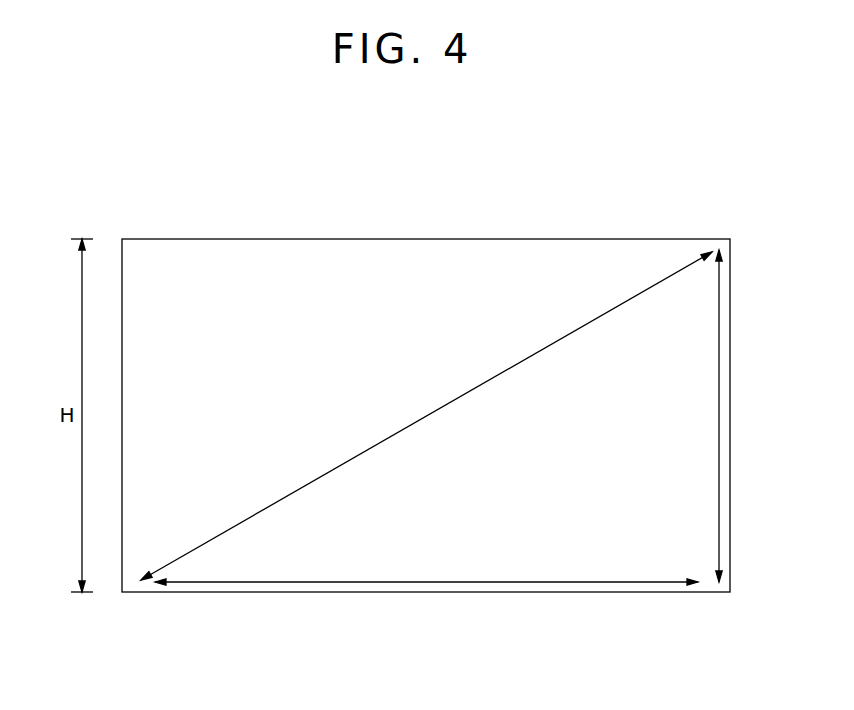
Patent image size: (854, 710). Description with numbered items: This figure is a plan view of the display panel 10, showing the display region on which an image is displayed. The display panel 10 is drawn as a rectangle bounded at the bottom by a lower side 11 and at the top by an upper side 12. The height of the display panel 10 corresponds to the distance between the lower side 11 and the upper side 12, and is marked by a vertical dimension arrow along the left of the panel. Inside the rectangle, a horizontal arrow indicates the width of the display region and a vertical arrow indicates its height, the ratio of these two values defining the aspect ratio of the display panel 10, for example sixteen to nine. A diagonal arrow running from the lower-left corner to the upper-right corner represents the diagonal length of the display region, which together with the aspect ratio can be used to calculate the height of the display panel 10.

The display panel 10 is at (398, 155).
The lower side 11 is at (535, 593).
The upper side 12 is at (215, 239).